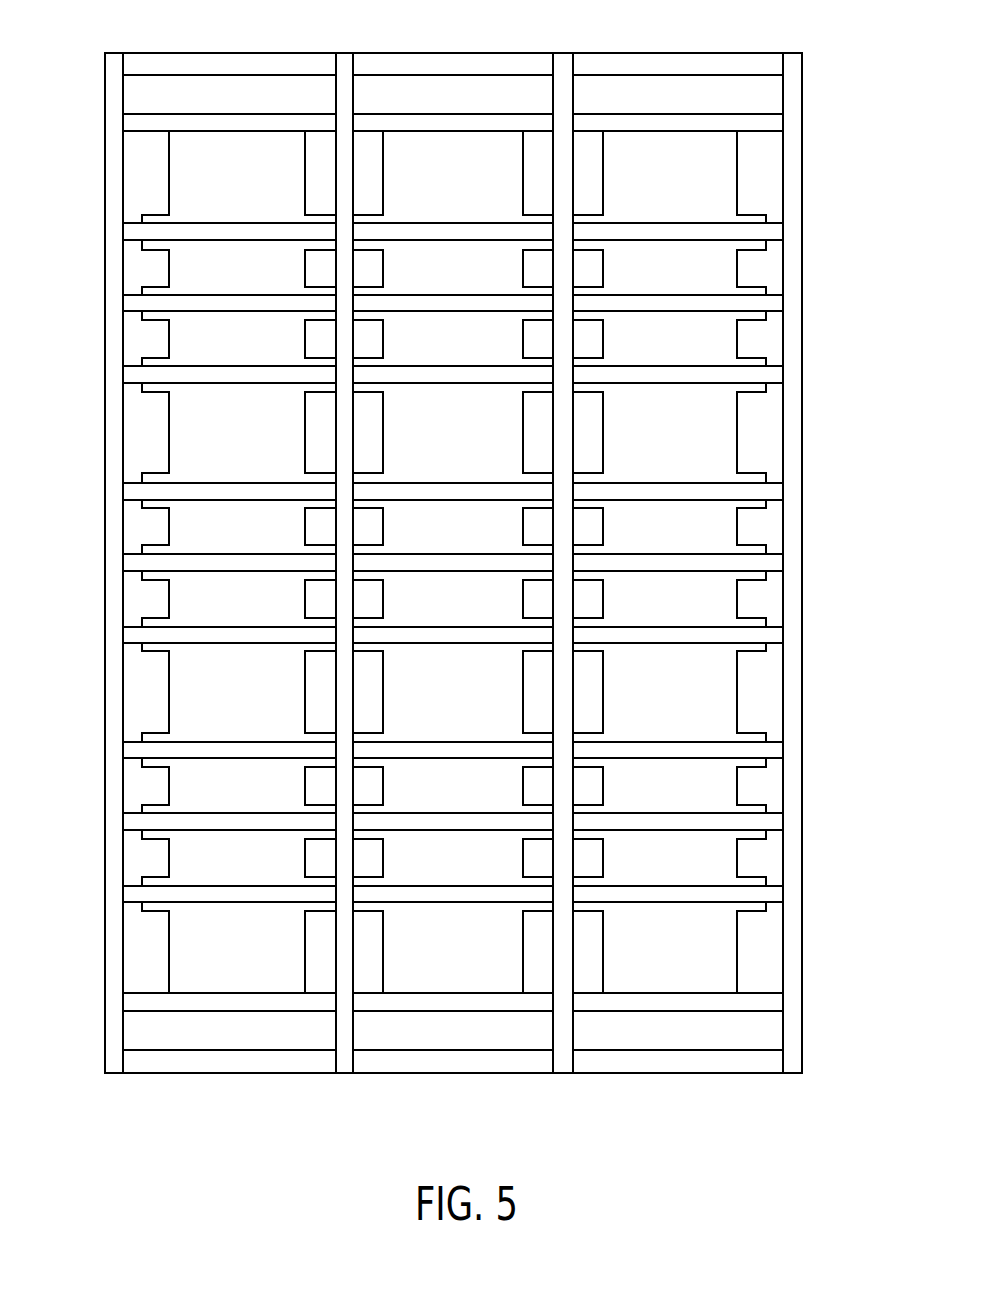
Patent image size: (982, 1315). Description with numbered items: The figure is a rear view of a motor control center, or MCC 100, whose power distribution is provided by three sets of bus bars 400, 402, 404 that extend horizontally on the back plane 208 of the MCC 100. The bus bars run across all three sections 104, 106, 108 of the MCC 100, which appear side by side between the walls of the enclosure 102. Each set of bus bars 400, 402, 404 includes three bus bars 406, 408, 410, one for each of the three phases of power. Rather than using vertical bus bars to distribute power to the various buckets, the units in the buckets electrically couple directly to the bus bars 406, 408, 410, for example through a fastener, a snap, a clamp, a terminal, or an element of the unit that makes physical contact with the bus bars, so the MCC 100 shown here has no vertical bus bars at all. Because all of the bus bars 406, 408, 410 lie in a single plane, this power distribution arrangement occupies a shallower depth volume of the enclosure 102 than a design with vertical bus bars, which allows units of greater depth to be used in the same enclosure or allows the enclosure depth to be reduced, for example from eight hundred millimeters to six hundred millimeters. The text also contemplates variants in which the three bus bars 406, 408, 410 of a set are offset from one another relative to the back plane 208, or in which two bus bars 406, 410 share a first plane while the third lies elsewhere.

The MCC 100 is at (105, 440).
The enclosure 102 is at (105, 682).
The section 104 is at (228, 92).
The section 106 is at (447, 92).
The section 108 is at (676, 92).
The back plane 208 is at (250, 1042).
The set of bus bars 400 is at (461, 816).
The set of bus bars 402 is at (807, 475).
The set of bus bars 404 is at (807, 215).
The bus bar 406 is at (135, 892).
The bus bar 408 is at (135, 820).
The bus bar 410 is at (135, 750).